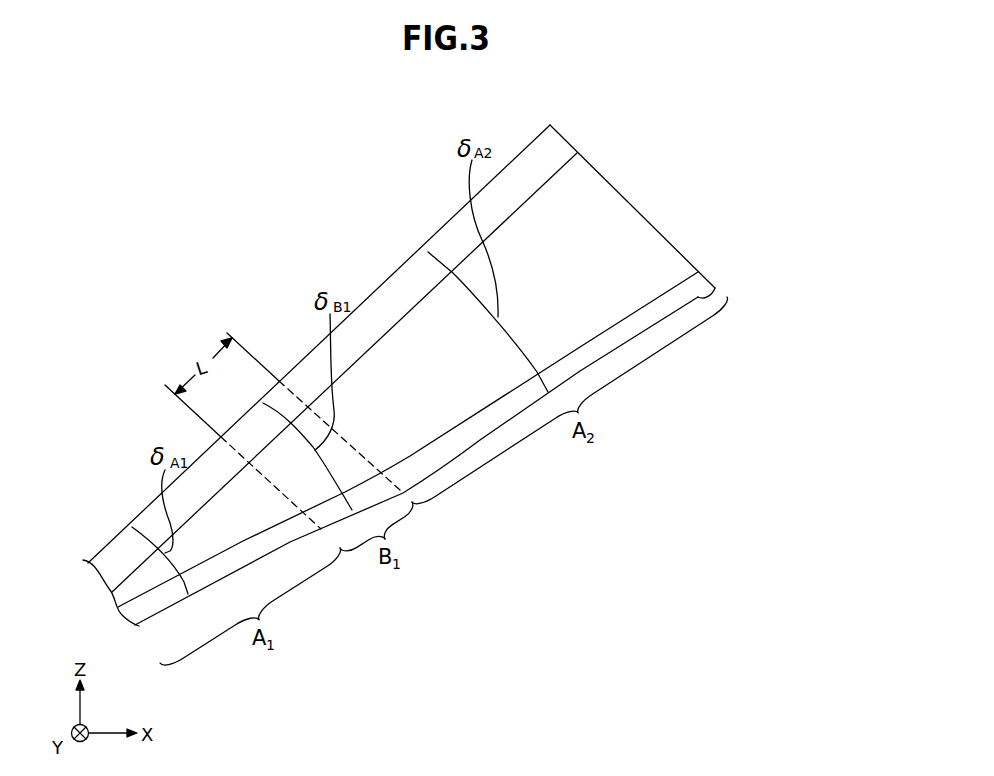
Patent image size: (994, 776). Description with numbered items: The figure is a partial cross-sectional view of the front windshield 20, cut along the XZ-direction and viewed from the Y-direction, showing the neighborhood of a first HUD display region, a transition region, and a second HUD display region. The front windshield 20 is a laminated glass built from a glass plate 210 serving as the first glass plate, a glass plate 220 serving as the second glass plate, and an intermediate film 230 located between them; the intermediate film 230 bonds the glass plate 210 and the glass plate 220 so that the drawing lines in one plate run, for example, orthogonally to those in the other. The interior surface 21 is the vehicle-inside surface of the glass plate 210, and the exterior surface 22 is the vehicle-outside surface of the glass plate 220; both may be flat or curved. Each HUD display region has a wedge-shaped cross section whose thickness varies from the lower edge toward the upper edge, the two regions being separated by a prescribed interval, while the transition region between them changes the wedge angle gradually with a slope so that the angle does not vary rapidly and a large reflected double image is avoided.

The front windshield 20 is at (466, 351).
The interior surface 21 is at (719, 294).
The exterior surface 22 is at (537, 142).
The glass plate 210 is at (697, 284).
The glass plate 220 is at (566, 158).
The intermediate film 230 is at (625, 226).